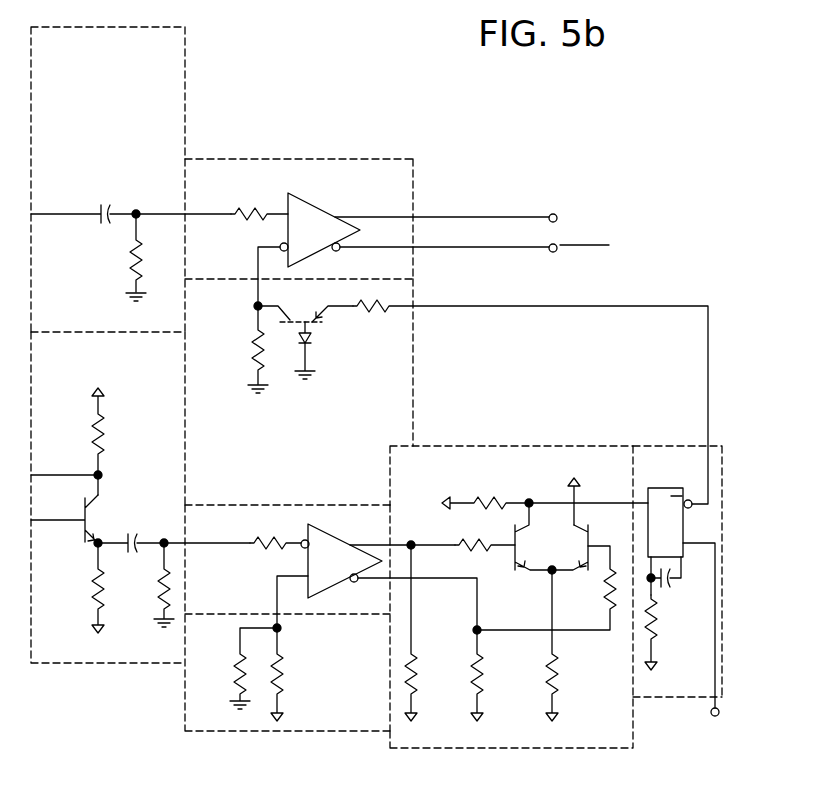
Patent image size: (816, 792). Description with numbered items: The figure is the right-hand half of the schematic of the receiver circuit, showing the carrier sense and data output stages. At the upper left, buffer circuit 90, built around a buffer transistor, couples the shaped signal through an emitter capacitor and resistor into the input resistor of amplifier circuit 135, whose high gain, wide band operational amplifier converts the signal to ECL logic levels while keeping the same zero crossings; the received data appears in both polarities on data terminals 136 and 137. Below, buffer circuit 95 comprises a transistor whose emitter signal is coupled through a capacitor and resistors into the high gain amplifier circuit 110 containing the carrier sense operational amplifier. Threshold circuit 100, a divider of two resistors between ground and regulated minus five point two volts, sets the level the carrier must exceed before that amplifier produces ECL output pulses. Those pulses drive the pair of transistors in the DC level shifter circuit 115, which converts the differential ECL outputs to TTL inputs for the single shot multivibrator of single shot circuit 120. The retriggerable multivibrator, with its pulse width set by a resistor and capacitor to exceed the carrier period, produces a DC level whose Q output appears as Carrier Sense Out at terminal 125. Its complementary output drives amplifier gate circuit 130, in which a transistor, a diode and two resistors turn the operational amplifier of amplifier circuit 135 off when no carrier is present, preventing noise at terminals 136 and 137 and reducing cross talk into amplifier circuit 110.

The buffer circuit 90 is at (186, 115).
The buffer circuit 95 is at (96, 665).
The threshold circuit 100 is at (232, 732).
The high gain amplifier circuit 110 is at (229, 601).
The DC level shifter circuit 115 is at (525, 445).
The single shot circuit 120 is at (688, 447).
The Carrier Sense Out terminal 125 is at (711, 712).
The amplifier gate circuit 130 is at (413, 298).
The amplifier circuit 135 is at (367, 230).
The data terminal 136 is at (552, 214).
The data terminal 137 is at (553, 252).